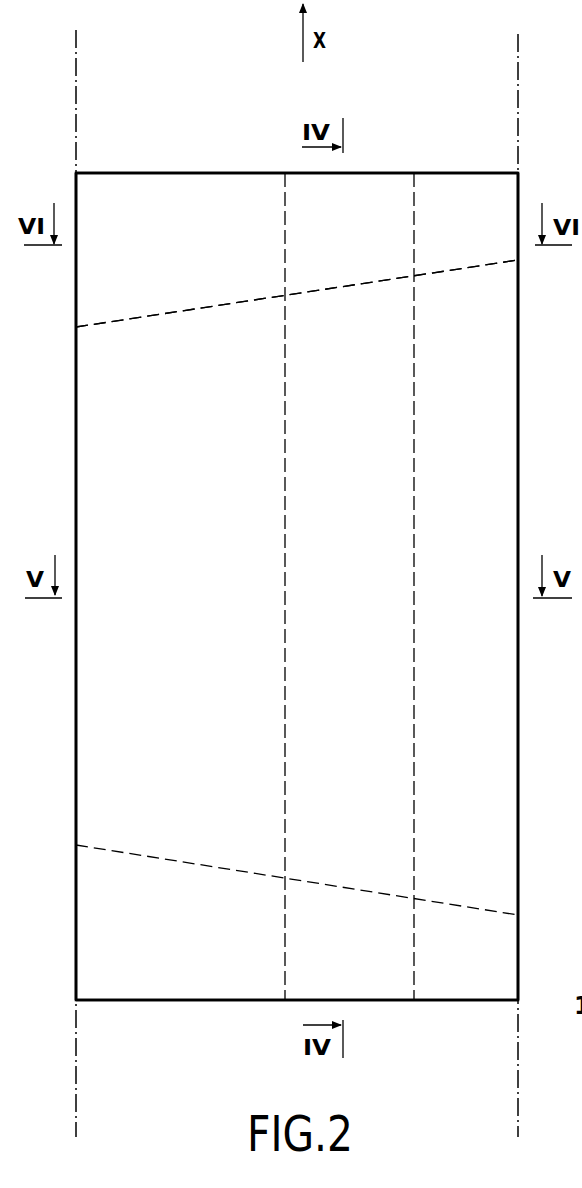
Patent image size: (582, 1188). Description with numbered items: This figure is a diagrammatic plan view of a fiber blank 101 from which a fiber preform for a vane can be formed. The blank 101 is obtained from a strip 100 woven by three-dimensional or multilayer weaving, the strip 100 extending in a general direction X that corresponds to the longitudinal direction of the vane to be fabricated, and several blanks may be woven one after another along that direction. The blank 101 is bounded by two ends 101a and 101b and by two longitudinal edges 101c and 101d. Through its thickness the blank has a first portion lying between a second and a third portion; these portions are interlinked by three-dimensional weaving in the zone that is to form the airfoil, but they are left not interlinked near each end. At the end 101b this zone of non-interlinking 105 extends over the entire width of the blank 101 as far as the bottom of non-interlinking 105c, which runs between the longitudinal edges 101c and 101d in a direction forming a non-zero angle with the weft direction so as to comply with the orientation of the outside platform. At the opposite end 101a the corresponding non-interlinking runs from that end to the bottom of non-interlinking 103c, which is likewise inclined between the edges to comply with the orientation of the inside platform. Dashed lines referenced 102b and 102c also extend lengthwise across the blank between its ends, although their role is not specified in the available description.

The strip 100 is at (78, 56).
The fiber blank 101 is at (70, 668).
The end of the blank 101a is at (183, 1003).
The end of the blank 101b is at (181, 173).
The longitudinal edge 101c is at (76, 478).
The longitudinal edge 101d is at (520, 460).
The first dashed boundary line 102b is at (285, 797).
The second dashed boundary line 102c is at (415, 765).
The zone of non-interlinking 105 is at (432, 148).
The bottom of non-interlinking 105c is at (207, 307).
The bottom of non-interlinking 103c is at (208, 866).